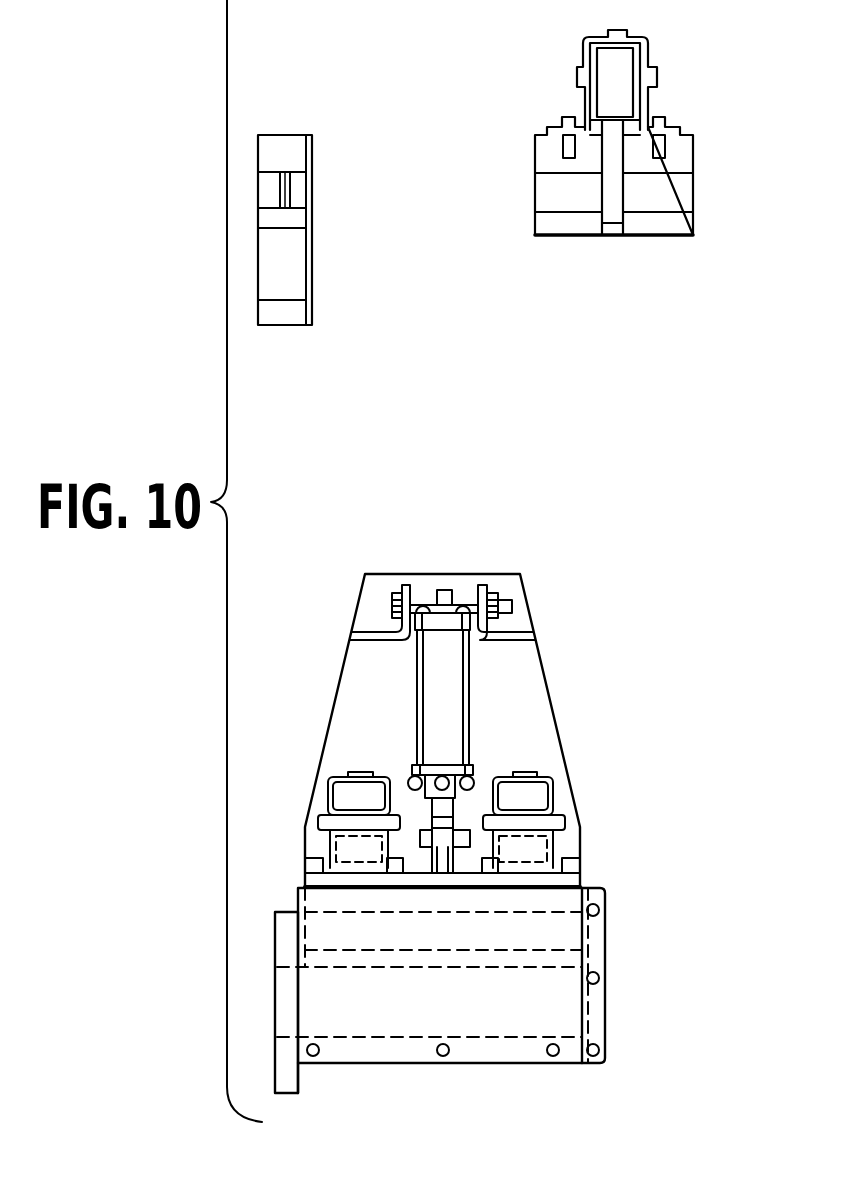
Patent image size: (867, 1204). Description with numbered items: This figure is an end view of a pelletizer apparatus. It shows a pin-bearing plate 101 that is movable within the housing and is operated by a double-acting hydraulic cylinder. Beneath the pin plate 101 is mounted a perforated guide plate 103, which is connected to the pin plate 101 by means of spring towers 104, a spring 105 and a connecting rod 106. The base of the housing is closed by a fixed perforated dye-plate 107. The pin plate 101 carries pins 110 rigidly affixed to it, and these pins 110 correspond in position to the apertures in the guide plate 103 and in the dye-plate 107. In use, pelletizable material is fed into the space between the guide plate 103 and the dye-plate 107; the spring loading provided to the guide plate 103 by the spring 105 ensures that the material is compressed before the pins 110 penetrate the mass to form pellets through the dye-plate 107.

The pin-bearing plate 101 is at (296, 151).
The perforated guide plate 103 is at (300, 220).
The spring towers 104 is at (650, 71).
The spring 105 is at (630, 94).
The connecting rod 106 is at (612, 195).
The fixed perforated dye-plate 107 is at (300, 311).
The pins 110 is at (291, 186).